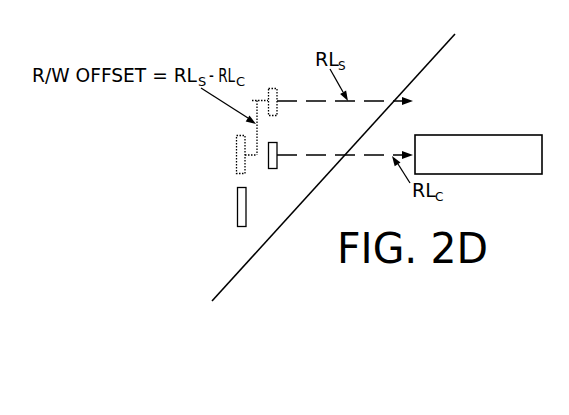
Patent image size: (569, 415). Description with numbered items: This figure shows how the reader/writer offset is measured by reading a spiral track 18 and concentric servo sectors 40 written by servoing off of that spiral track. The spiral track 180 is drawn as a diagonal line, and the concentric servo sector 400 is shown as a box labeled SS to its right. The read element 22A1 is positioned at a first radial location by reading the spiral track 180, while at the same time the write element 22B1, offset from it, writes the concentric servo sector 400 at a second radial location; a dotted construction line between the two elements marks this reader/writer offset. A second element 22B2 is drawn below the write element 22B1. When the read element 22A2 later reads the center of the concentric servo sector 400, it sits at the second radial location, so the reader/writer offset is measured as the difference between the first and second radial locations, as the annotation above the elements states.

The spiral track 18 is at (333, 159).
The spiral track 180 is at (437, 55).
The concentric servo sector 40 is at (478, 133).
The concentric servo sector 400 is at (497, 135).
The read element 22A1 is at (272, 88).
The read element 22A2 is at (272, 168).
The write element 22B1 is at (236, 145).
The second element (second head) 22B2 is at (237, 203).